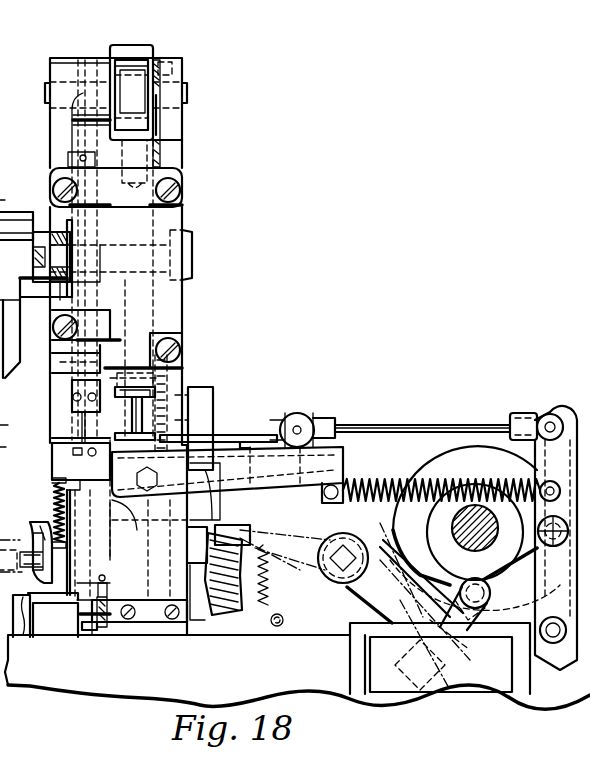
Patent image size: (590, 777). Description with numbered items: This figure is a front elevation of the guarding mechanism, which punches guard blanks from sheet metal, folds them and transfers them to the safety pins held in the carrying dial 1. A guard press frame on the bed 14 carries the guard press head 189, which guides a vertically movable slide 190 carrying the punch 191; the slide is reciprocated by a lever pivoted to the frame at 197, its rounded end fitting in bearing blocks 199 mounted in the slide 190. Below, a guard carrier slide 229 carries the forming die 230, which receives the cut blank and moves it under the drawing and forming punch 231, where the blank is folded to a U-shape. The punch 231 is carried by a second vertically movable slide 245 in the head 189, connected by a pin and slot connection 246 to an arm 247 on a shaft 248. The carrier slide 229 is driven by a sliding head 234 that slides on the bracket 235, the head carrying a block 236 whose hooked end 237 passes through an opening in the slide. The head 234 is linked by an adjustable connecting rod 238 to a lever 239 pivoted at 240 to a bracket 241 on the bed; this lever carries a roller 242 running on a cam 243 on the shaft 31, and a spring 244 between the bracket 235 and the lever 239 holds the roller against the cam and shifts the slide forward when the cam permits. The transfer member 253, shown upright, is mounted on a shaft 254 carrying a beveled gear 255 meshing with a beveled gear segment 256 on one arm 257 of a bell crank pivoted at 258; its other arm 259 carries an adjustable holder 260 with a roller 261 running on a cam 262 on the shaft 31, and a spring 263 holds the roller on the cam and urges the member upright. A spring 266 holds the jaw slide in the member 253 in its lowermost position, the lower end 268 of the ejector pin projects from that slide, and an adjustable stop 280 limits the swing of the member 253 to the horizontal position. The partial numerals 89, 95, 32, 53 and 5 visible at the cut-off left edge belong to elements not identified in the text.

The bed 14 is at (108, 692).
The guard press head 189 is at (145, 232).
The bearing blocks 199 is at (137, 68).
The pivot 197 is at (187, 95).
The slide 190 is at (160, 130).
The shaft 248 is at (193, 252).
The arm 247 is at (66, 230).
The pin and slot connection 246 is at (62, 299).
The slide 245 is at (60, 358).
The punch 191 is at (145, 405).
The guard carrier slide 229 is at (205, 445).
The hooked end 237 is at (242, 436).
The block 236 is at (292, 418).
The adjustable connecting rod 238 is at (420, 425).
The sliding head 234 is at (315, 462).
The bracket 235 is at (340, 500).
The spring 244 is at (398, 482).
The cam 243 is at (540, 492).
The shaft 31 is at (497, 528).
The cam 262 is at (395, 525).
The arm 259 is at (400, 560).
The pivot 258 is at (318, 558).
The beveled gear 255 is at (250, 535).
The arm 257 is at (275, 590).
The spring 263 is at (284, 618).
The beveled gear segment 256 is at (230, 612).
The shaft 254 is at (143, 625).
The lower end of ejector pin 268 is at (90, 632).
The transfer member 253 is at (80, 548).
The adjustable stop 280 is at (100, 582).
The spring 266 is at (54, 507).
The forming die 230 is at (75, 450).
The drawing and forming punch 231 is at (75, 437).
The lever 239 is at (545, 570).
The roller 242 is at (553, 546).
The pivot 240 is at (553, 640).
The bracket 241 is at (478, 685).
The holder 260 is at (455, 595).
The roller 261 is at (505, 582).
The part 89 is at (10, 188).
The part 95 is at (10, 413).
The part 32 is at (10, 456).
The part 53 is at (11, 559).
The carrying dial 1 is at (28, 533).
The part 5 is at (35, 567).